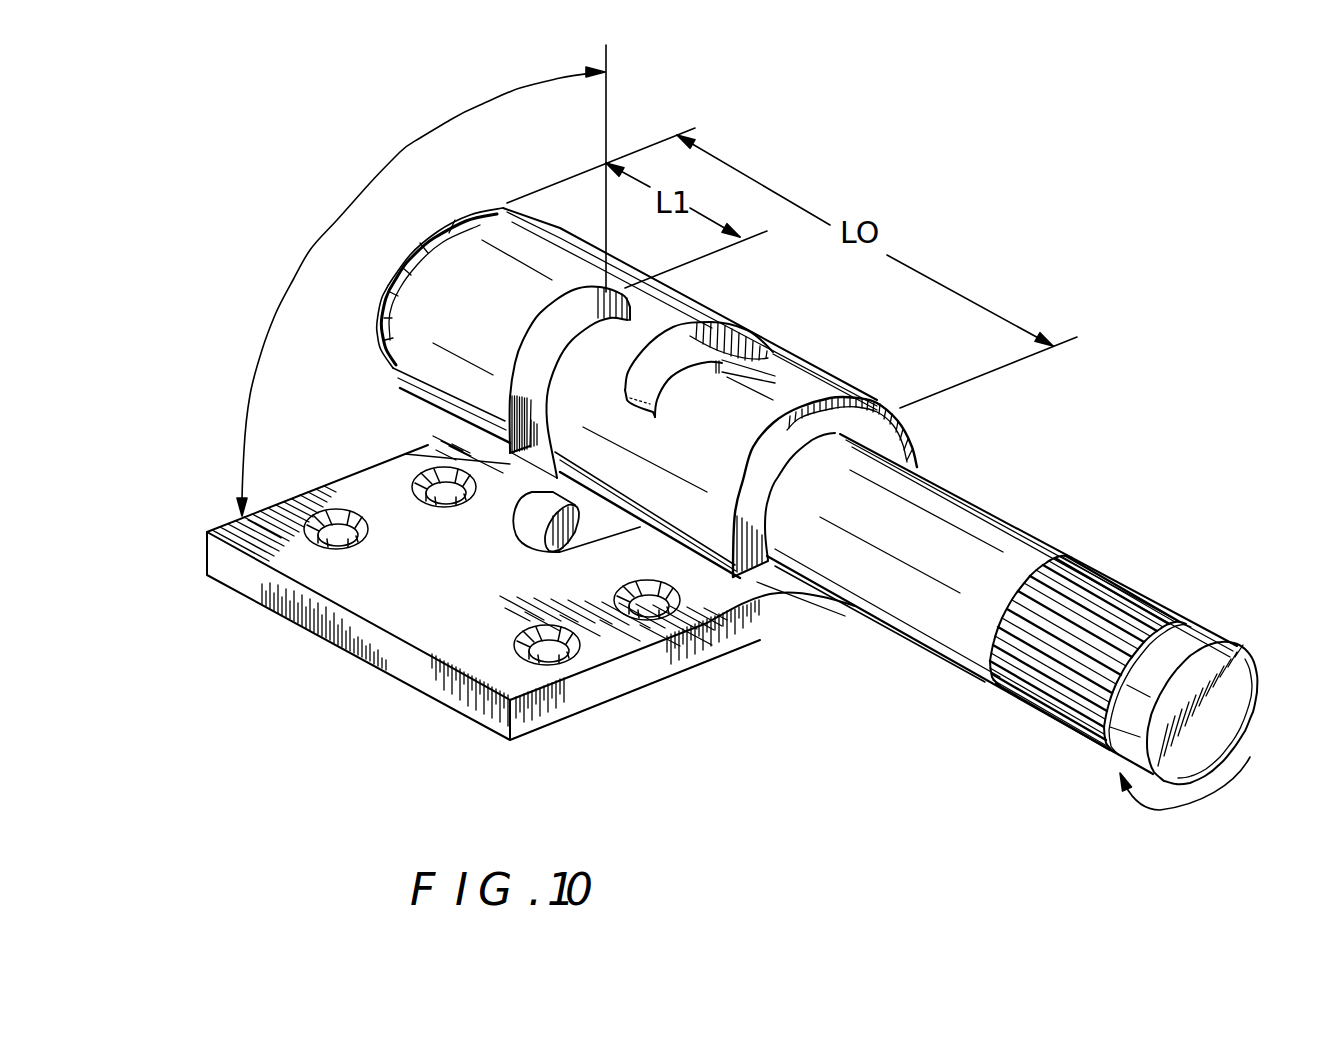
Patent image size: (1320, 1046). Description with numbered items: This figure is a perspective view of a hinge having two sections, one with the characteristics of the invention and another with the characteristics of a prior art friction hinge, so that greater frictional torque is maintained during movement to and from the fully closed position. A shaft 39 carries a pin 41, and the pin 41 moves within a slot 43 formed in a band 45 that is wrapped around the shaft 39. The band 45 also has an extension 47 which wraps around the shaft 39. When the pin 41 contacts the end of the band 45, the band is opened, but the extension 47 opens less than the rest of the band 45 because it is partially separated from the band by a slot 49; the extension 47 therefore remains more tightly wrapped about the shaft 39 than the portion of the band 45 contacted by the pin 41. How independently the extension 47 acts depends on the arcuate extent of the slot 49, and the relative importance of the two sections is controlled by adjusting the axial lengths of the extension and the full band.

The shaft 39 is at (887, 579).
The pin 41 is at (543, 535).
The slot 43 is at (733, 355).
The band 45 is at (396, 606).
The extension 47 is at (435, 333).
The slot 49 is at (447, 420).